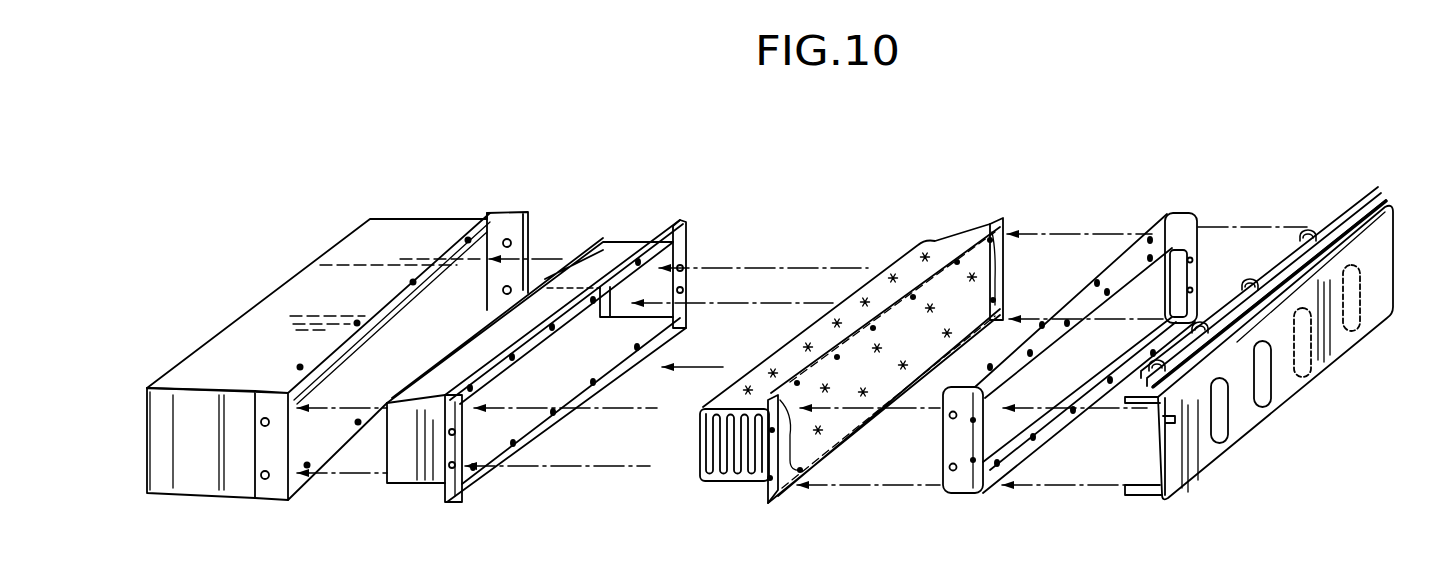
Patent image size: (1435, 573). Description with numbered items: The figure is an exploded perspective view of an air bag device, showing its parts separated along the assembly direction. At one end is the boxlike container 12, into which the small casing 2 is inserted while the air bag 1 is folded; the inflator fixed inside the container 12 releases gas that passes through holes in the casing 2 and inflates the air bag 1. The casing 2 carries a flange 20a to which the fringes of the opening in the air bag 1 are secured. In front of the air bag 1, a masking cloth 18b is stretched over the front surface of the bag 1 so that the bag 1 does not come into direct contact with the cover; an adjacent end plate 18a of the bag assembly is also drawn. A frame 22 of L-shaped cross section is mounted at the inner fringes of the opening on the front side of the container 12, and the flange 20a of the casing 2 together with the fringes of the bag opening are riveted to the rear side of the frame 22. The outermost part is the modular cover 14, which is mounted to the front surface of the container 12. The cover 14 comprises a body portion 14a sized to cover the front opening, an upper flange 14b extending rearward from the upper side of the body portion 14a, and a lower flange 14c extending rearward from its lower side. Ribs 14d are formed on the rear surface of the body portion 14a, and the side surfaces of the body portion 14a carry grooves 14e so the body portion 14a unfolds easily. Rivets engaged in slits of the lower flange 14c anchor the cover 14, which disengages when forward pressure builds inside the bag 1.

The container 12 is at (436, 226).
The casing 2 is at (582, 330).
The flange 20a is at (684, 243).
The air bag 1 is at (858, 331).
The rear end plate of filter 18a is at (996, 226).
The masking cloth 18b is at (847, 417).
The frame 22 is at (1167, 227).
The modular cover 14 is at (1261, 354).
The body portion 14a is at (1345, 343).
The upper flange 14b is at (1323, 223).
The lower flange 14c is at (1147, 496).
The ribs 14d is at (1343, 342).
The grooves 14e is at (1167, 418).